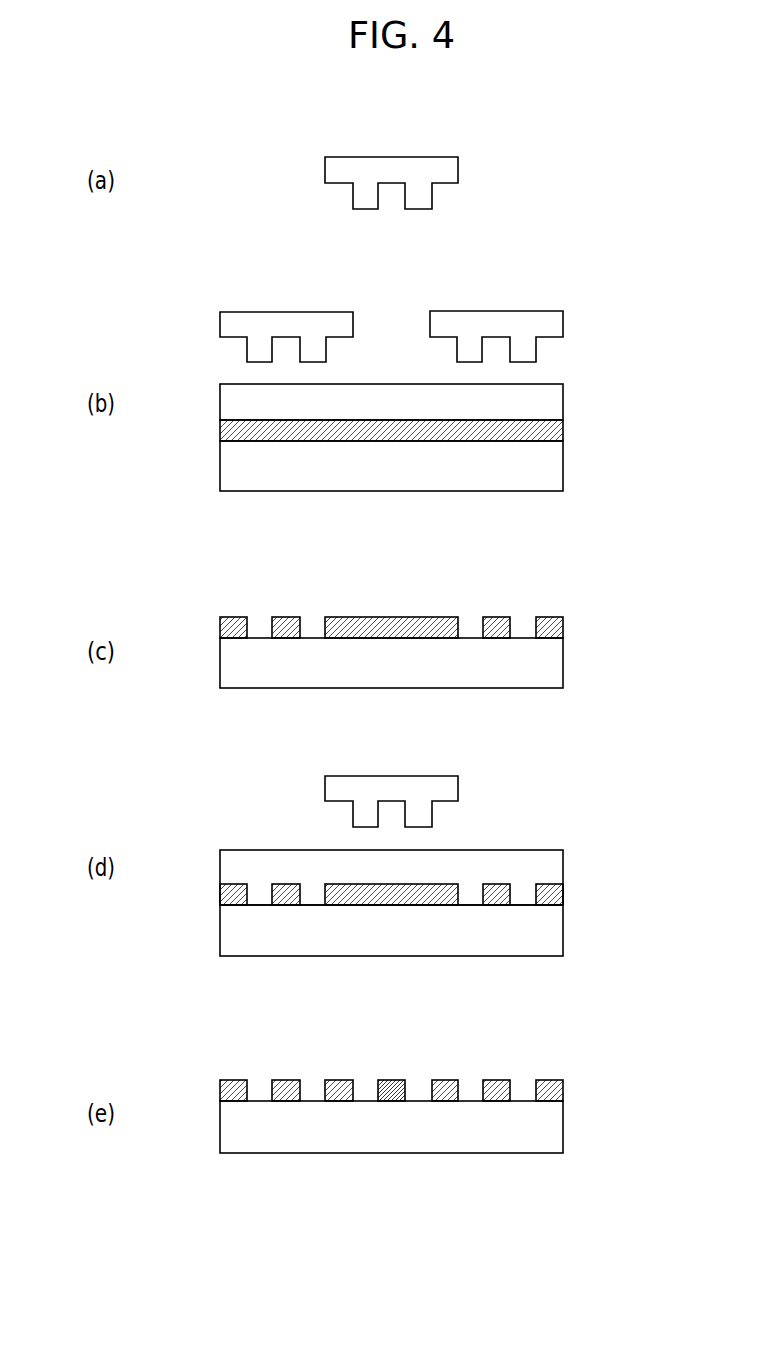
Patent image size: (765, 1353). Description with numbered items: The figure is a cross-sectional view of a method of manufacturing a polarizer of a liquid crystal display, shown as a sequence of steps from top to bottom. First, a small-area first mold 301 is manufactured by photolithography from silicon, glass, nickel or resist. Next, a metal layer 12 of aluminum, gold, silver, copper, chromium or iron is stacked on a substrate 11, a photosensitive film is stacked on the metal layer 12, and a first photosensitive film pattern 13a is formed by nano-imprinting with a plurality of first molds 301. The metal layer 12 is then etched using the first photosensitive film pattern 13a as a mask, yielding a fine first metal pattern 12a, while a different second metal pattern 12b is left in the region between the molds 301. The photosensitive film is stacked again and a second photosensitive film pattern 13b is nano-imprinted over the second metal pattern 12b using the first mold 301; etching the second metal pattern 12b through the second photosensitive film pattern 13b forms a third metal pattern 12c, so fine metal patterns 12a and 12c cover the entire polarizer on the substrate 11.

The first mold 301 is at (452, 168).
The substrate 11 is at (550, 467).
The metal layer 12 is at (550, 432).
The first metal pattern 12a is at (558, 627).
The second metal pattern 12b is at (386, 629).
The third metal pattern 12c is at (392, 1080).
The first photosensitive film pattern 13a is at (550, 403).
The second photosensitive film pattern 13b is at (550, 867).